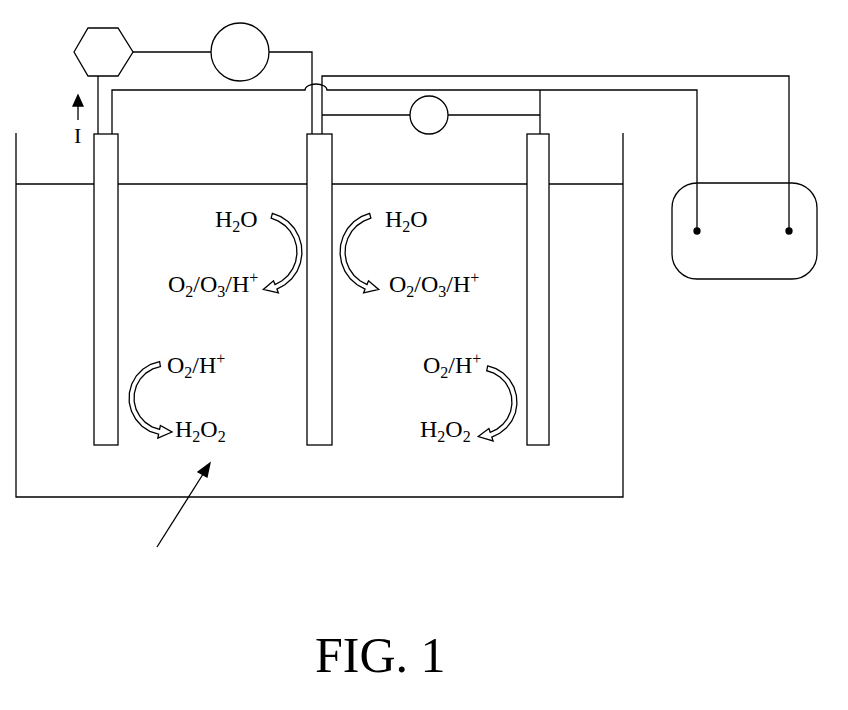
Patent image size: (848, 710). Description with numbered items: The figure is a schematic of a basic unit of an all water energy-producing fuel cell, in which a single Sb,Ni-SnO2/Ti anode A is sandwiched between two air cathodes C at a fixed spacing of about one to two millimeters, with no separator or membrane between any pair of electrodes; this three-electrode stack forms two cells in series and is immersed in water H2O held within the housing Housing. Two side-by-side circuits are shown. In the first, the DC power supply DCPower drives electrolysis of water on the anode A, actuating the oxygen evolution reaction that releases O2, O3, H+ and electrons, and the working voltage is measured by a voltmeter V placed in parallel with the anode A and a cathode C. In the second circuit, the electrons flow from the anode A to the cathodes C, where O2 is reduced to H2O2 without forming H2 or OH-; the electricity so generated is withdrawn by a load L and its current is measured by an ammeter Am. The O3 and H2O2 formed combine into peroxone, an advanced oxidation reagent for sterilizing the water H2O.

The housing Housing is at (637, 425).
The cathode C is at (321, 289).
The anode A is at (319, 289).
The load L is at (103, 52).
The ammeter Am is at (240, 52).
The voltmeter V is at (431, 115).
The DC power supply DCPower is at (744, 247).
The water H2O is at (171, 524).